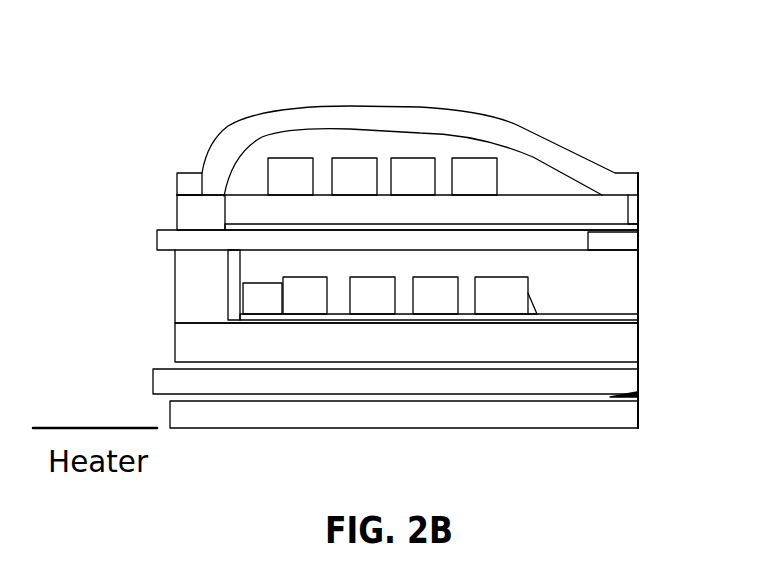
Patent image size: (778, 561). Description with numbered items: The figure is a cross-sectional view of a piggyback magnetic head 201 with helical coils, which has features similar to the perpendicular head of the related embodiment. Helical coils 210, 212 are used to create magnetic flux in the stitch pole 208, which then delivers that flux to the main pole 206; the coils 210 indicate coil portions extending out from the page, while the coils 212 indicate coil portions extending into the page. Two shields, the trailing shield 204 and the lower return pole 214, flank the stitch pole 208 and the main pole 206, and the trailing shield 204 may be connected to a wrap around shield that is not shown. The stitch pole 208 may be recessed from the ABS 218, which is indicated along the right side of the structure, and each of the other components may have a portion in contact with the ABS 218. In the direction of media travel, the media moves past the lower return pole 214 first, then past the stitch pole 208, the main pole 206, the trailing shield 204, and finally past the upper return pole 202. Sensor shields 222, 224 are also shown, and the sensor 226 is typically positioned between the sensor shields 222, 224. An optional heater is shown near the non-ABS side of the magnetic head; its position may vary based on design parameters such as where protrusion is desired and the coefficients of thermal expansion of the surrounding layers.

The piggyback magnetic head 201 is at (256, 78).
The upper return pole 202 is at (560, 142).
The trailing shield 204 is at (640, 208).
The main pole 206 is at (640, 232).
The stitch pole 208 is at (582, 250).
The helical coils 210 is at (269, 194).
The helical coils 212 is at (287, 273).
The lower return pole 214 is at (450, 356).
The ABS 218 is at (652, 331).
The sensor shield 222 is at (153, 377).
The sensor shield 224 is at (170, 413).
The sensor 226 is at (622, 397).